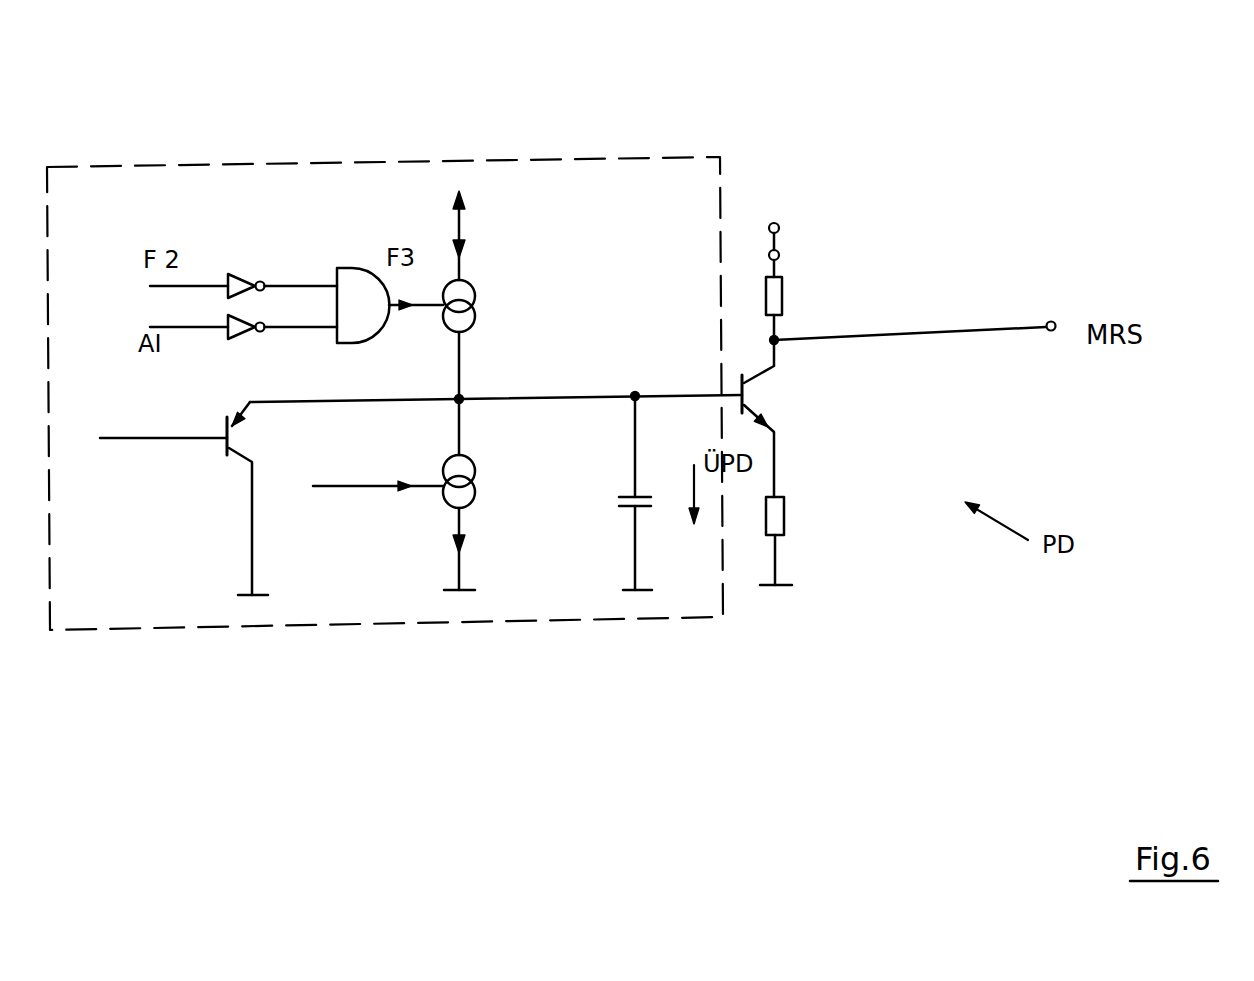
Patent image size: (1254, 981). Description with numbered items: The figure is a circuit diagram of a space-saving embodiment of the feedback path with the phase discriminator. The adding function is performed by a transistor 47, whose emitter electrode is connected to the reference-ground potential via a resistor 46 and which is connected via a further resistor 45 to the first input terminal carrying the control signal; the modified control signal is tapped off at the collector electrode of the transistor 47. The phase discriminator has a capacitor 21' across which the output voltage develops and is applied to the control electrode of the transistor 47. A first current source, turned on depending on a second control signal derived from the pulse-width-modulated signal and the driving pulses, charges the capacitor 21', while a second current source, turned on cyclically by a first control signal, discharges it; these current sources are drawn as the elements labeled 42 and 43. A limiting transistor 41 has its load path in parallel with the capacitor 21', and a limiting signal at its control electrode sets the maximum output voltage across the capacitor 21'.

The limiting transistor 41 is at (275, 440).
The first current source 42 is at (510, 208).
The second current source 43 is at (436, 590).
The further resistor 45 is at (803, 139).
The resistor 46 is at (807, 636).
The transistor 47 is at (834, 558).
The capacitor 21' is at (682, 627).